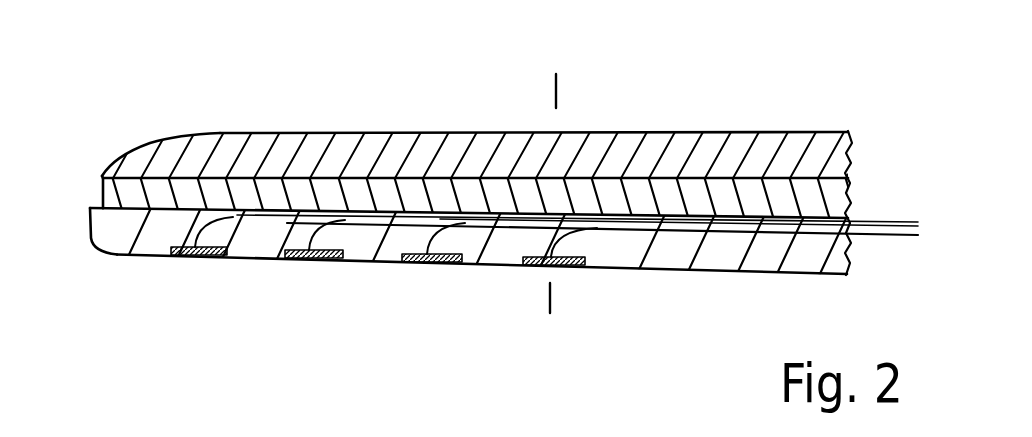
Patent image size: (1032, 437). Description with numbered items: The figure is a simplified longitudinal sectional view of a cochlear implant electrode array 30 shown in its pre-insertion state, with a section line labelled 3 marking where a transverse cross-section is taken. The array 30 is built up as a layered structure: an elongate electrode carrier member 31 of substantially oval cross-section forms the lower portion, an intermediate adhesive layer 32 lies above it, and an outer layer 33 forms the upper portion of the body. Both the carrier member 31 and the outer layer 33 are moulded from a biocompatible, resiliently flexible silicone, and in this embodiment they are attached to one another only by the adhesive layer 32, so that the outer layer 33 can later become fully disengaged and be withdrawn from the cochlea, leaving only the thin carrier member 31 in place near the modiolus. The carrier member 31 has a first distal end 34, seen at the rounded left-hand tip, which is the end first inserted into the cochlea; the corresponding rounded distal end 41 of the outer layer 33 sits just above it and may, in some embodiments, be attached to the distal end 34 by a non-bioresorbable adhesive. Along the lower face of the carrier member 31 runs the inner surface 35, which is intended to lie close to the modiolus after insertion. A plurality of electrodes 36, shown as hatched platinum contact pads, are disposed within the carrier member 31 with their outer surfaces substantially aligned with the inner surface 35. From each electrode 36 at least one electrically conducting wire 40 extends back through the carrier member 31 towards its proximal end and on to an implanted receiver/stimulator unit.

The cochlear implant electrode array 30 is at (193, 83).
The elongate electrode carrier member 31 is at (720, 274).
The intermediate adhesive layer 32 is at (382, 182).
The outer layer 33 is at (733, 135).
The first distal end 34 is at (88, 242).
The inner surface 35 is at (363, 265).
The electrodes 36 is at (199, 257).
The electrically conducting wire 40 is at (252, 216).
The distal end of the outer layer 41 is at (118, 162).
The section line 3- 3 is at (576, 106).